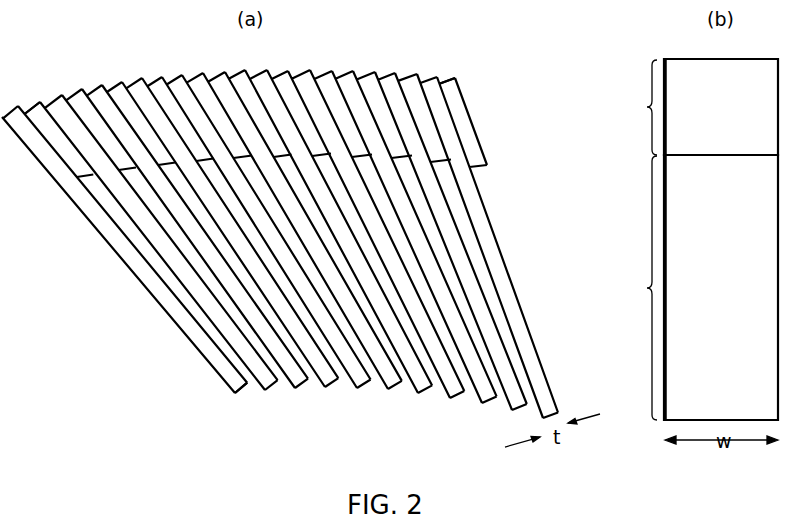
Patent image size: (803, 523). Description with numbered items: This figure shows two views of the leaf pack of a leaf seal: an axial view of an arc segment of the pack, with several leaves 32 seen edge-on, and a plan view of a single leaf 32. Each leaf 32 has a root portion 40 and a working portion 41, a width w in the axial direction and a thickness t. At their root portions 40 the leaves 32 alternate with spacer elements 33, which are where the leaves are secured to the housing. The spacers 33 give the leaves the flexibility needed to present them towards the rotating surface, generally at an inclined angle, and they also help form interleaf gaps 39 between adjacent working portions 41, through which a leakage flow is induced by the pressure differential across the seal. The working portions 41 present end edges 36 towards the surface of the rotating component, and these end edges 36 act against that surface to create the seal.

The leaves 32 is at (98, 233).
The spacer elements 33 is at (36, 102).
The end edges 36 is at (237, 397).
The interleaf gaps 39 is at (447, 185).
The root portion 40 is at (30, 206).
The working portion 41 is at (148, 323).